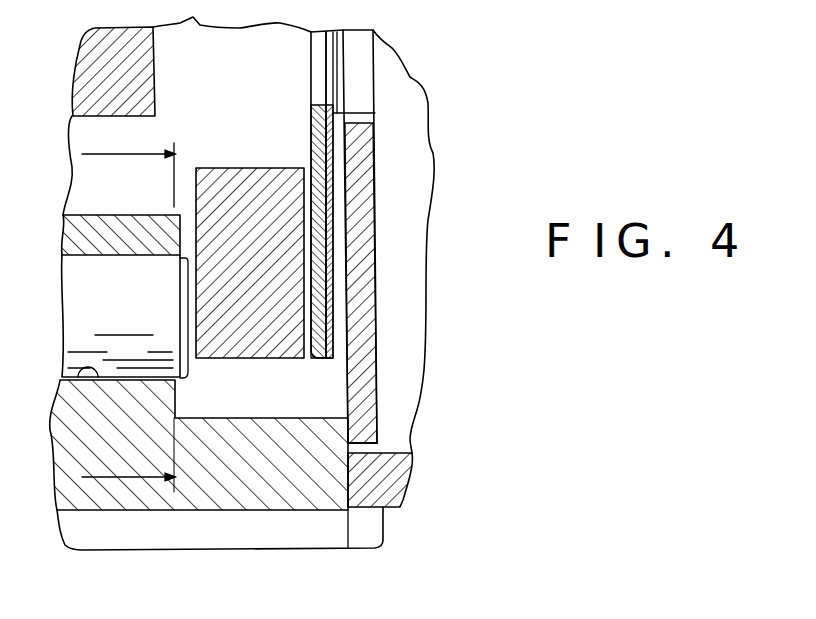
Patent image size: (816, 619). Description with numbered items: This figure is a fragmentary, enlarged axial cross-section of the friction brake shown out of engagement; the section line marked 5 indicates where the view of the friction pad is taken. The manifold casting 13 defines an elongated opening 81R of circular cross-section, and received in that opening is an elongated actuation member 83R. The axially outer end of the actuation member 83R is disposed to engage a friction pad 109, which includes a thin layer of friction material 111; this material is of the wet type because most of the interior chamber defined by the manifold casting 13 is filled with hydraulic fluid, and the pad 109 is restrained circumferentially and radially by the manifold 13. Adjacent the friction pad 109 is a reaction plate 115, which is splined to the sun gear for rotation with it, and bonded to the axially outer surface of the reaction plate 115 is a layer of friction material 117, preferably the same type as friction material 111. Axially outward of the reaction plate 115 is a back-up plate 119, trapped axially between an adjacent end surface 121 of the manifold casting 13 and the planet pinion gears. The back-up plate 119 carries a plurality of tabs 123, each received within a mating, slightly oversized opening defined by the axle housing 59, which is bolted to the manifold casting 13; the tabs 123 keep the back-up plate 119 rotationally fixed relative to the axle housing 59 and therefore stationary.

The manifold casting 13 is at (232, 490).
The axle housing 59 is at (395, 466).
The elongated opening 81R is at (100, 386).
The elongated actuation member 83R is at (125, 296).
The friction pad 109 is at (220, 188).
The friction material 111 is at (303, 167).
The reaction plate 115 is at (311, 113).
The friction material 117 is at (340, 113).
The back-up plate 119 is at (362, 206).
The end surface 121 is at (352, 482).
The tab 123 is at (362, 432).
The section line 5- 5 is at (129, 317).